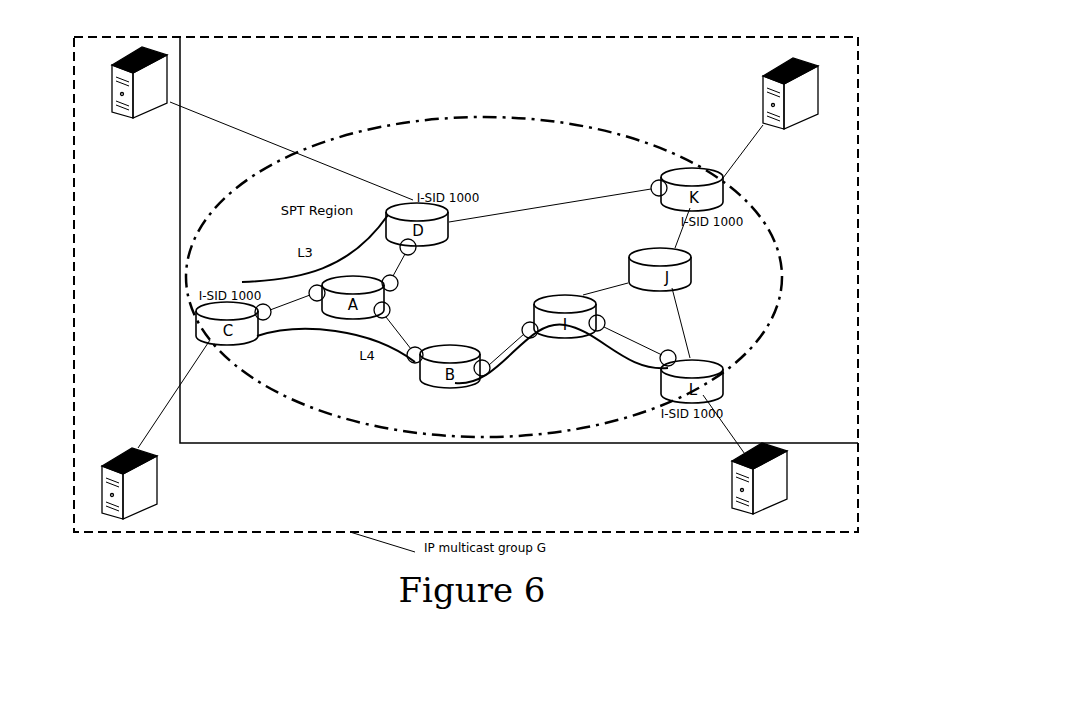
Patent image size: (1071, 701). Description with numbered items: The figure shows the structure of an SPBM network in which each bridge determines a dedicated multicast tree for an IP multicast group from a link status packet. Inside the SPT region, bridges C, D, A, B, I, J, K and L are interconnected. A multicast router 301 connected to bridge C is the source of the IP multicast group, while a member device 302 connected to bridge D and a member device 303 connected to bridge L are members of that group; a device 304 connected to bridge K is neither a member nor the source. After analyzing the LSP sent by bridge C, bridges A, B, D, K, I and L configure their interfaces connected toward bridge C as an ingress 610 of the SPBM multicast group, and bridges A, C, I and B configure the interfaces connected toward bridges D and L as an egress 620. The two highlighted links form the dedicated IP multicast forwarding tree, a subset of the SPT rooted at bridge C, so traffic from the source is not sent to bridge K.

The multicast router 301 is at (157, 478).
The member device 302 is at (167, 80).
The member device 303 is at (783, 485).
The device 304 is at (817, 103).
The ingress 610 is at (438, 240).
The egress 620 is at (266, 304).